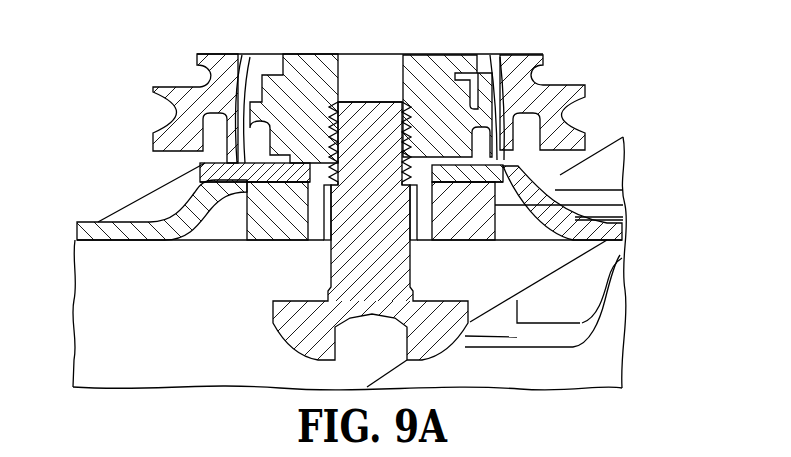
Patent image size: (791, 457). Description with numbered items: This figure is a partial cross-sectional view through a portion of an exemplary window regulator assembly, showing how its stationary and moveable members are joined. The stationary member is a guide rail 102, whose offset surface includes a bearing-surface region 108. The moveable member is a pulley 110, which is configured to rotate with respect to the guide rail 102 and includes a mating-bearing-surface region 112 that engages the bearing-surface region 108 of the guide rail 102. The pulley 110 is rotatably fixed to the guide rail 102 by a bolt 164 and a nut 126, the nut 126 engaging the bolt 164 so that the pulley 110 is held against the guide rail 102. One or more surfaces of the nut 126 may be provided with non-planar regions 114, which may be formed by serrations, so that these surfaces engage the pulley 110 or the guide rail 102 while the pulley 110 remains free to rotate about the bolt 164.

The guide rail 102 is at (125, 222).
The bearing-surface region 108 is at (368, 118).
The pulley 110 is at (530, 78).
The mating-bearing-surface region 112 is at (243, 55).
The non-planar regions 114 is at (160, 142).
The nut 126 is at (243, 212).
The bolt 164 is at (273, 317).